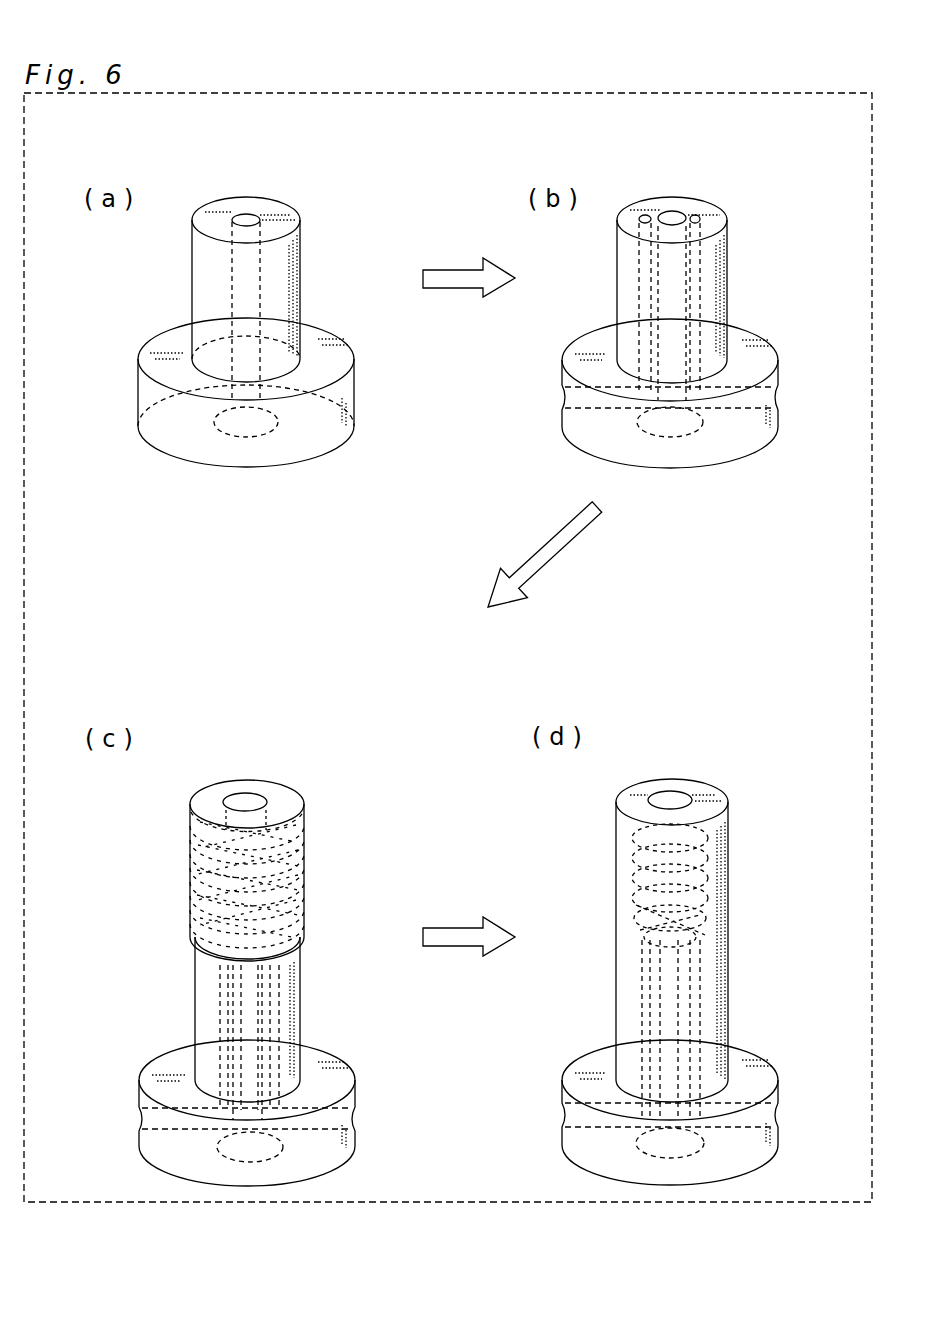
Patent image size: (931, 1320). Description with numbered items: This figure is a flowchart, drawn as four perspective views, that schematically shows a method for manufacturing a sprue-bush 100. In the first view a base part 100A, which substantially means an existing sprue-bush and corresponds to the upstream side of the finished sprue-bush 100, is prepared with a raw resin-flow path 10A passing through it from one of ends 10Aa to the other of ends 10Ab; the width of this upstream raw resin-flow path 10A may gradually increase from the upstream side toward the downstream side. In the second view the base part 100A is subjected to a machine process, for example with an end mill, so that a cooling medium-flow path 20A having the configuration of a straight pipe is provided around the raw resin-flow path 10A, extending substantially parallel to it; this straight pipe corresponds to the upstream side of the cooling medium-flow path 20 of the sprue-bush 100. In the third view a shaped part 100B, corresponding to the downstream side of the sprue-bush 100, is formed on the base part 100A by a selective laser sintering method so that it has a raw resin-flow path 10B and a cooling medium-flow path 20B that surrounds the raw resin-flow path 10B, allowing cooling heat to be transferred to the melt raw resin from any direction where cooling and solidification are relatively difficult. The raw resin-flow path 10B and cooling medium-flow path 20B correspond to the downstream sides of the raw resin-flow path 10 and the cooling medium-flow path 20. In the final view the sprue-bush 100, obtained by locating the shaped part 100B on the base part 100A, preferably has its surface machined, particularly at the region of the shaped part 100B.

The base part 100A is at (313, 205).
The raw resin-flow path 10A is at (235, 300).
The other of ends 10Ab is at (247, 212).
The one of ends 10Aa is at (247, 413).
The cooling medium-flow path 20A is at (700, 275).
The shaped part 100B is at (316, 817).
The cooling medium-flow path 20B is at (203, 843).
The raw resin-flow path 10B is at (226, 865).
The sprue-bush 100 is at (738, 795).
The raw resin-flow path 10 is at (650, 973).
The cooling medium-flow path 20 is at (628, 866).